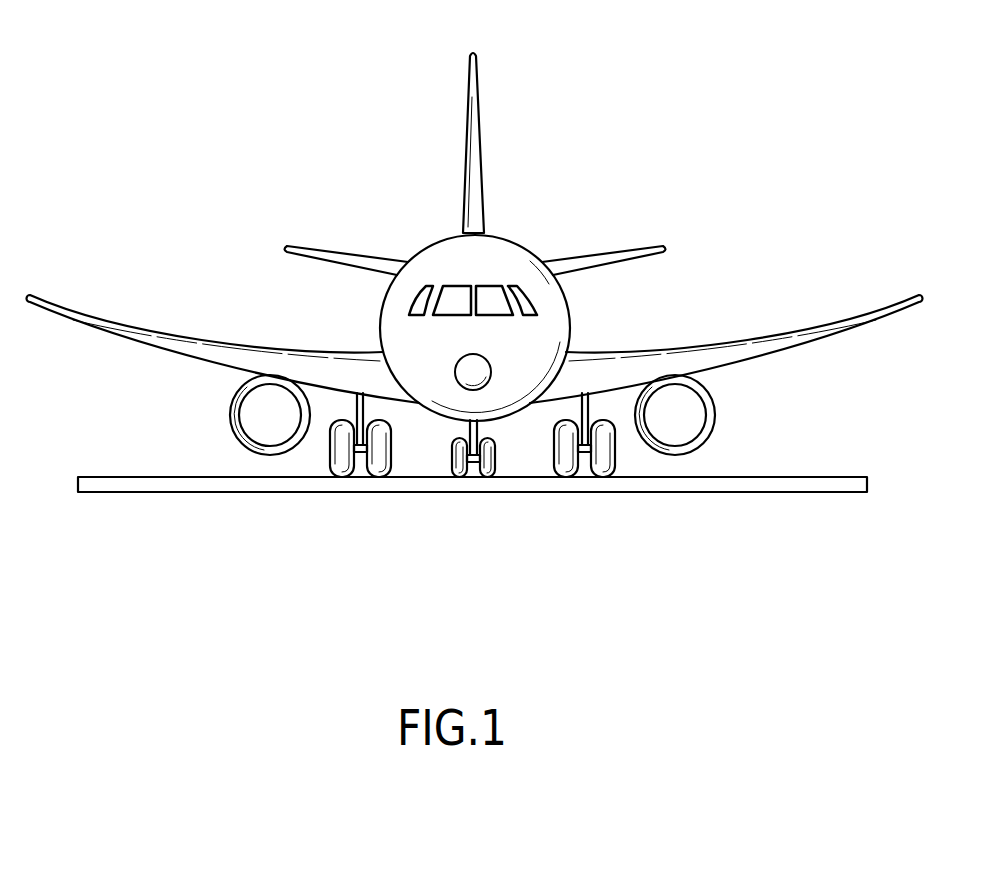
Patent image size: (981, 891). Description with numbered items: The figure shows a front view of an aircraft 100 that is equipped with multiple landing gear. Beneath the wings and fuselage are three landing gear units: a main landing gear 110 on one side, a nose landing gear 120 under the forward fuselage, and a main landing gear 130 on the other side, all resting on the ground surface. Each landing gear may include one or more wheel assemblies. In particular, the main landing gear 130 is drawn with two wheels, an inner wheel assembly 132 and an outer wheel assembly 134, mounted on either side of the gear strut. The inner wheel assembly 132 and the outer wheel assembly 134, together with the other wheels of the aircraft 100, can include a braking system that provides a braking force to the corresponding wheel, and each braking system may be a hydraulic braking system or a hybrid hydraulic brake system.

The aircraft 100 is at (316, 146).
The main landing gear 110 is at (615, 463).
The nose landing gear 120 is at (495, 463).
The main landing gear 130 is at (327, 452).
The inner wheel assembly 132 is at (390, 473).
The outer wheel assembly 134 is at (344, 475).